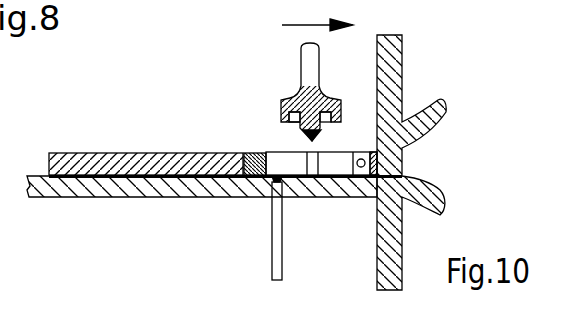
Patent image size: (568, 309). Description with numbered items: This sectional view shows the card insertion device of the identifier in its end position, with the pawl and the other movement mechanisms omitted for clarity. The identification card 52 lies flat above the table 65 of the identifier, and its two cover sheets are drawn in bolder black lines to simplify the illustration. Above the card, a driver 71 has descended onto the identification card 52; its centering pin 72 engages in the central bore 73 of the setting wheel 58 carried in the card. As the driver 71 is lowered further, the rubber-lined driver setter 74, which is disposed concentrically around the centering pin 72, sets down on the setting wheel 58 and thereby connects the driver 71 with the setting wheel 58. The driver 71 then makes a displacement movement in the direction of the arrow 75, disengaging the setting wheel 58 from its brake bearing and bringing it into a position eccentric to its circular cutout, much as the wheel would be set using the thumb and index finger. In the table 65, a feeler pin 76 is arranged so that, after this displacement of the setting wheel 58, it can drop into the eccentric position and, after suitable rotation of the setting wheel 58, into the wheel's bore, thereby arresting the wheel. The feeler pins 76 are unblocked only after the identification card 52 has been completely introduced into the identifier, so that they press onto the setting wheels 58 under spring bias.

The identification card 52 is at (85, 153).
The table 65 is at (120, 188).
The driver 71 is at (310, 65).
The driver setter 74 is at (283, 116).
The centering pin 72 is at (304, 132).
The arrow 75 is at (317, 15).
The central bore 73 is at (311, 176).
The setting wheel 58 is at (340, 165).
The feeler pin 76 is at (274, 254).